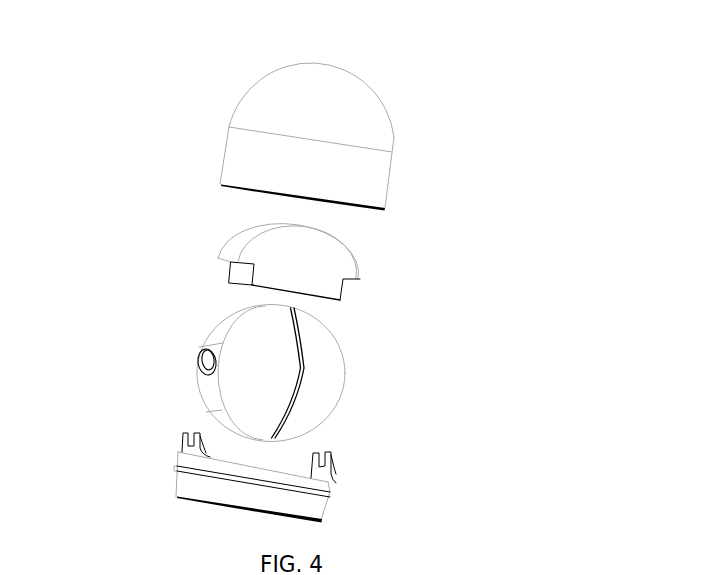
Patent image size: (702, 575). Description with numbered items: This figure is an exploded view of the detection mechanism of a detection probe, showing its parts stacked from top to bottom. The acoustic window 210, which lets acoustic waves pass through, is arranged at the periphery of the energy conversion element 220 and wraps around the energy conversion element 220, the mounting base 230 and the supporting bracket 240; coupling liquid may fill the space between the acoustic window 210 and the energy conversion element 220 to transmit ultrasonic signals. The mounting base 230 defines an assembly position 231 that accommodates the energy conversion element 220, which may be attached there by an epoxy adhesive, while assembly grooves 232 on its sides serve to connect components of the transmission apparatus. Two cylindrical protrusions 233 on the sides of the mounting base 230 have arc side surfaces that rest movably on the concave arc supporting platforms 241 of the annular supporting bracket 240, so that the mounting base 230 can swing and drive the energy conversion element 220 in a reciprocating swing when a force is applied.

The acoustic window 210 is at (380, 127).
The energy conversion element 220 is at (360, 277).
The mounting base 230 is at (267, 370).
The assembly position 231 is at (252, 307).
The assembly groove 232 is at (302, 343).
The cylindrical protrusion 233 is at (200, 360).
The supporting bracket 240 is at (249, 476).
The concave arc supporting platform 241 is at (182, 442).